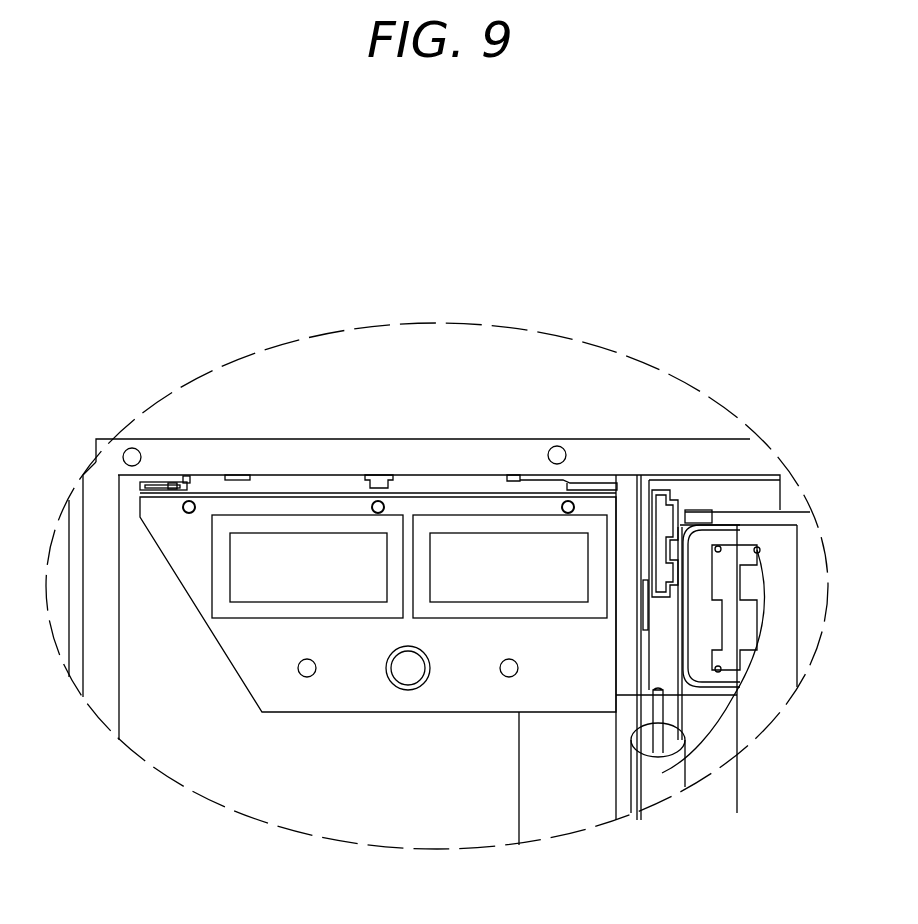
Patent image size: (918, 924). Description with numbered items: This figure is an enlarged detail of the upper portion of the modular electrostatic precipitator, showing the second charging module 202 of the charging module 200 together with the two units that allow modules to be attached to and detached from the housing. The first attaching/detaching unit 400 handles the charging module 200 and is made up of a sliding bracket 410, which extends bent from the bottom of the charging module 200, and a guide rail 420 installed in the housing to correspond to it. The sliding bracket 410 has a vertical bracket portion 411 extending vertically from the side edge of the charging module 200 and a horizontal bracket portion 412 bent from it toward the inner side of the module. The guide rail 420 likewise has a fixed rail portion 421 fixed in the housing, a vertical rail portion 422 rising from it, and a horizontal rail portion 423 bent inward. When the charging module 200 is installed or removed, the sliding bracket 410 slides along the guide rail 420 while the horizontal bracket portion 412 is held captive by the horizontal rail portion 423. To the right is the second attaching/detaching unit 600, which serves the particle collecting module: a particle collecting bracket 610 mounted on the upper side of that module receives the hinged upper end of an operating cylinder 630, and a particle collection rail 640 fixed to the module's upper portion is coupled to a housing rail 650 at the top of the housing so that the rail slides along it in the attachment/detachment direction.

The charging module 200 is at (438, 474).
The second charging module 202 is at (340, 697).
The first attaching/detaching unit 400 is at (337, 344).
The sliding bracket 410 is at (122, 365).
The vertical bracket portion 411 is at (140, 488).
The horizontal bracket portion 412 is at (160, 483).
The guide rail 420 is at (392, 365).
The fixed rail portion 421 is at (225, 477).
The vertical rail portion 422 is at (187, 478).
The horizontal rail portion 423 is at (173, 487).
The second attaching/detaching unit 600 is at (701, 543).
The particle collecting bracket 610 is at (640, 630).
The operating cylinder 630 is at (757, 547).
The particle collection rail 640 is at (680, 513).
The housing rail 650 is at (667, 503).